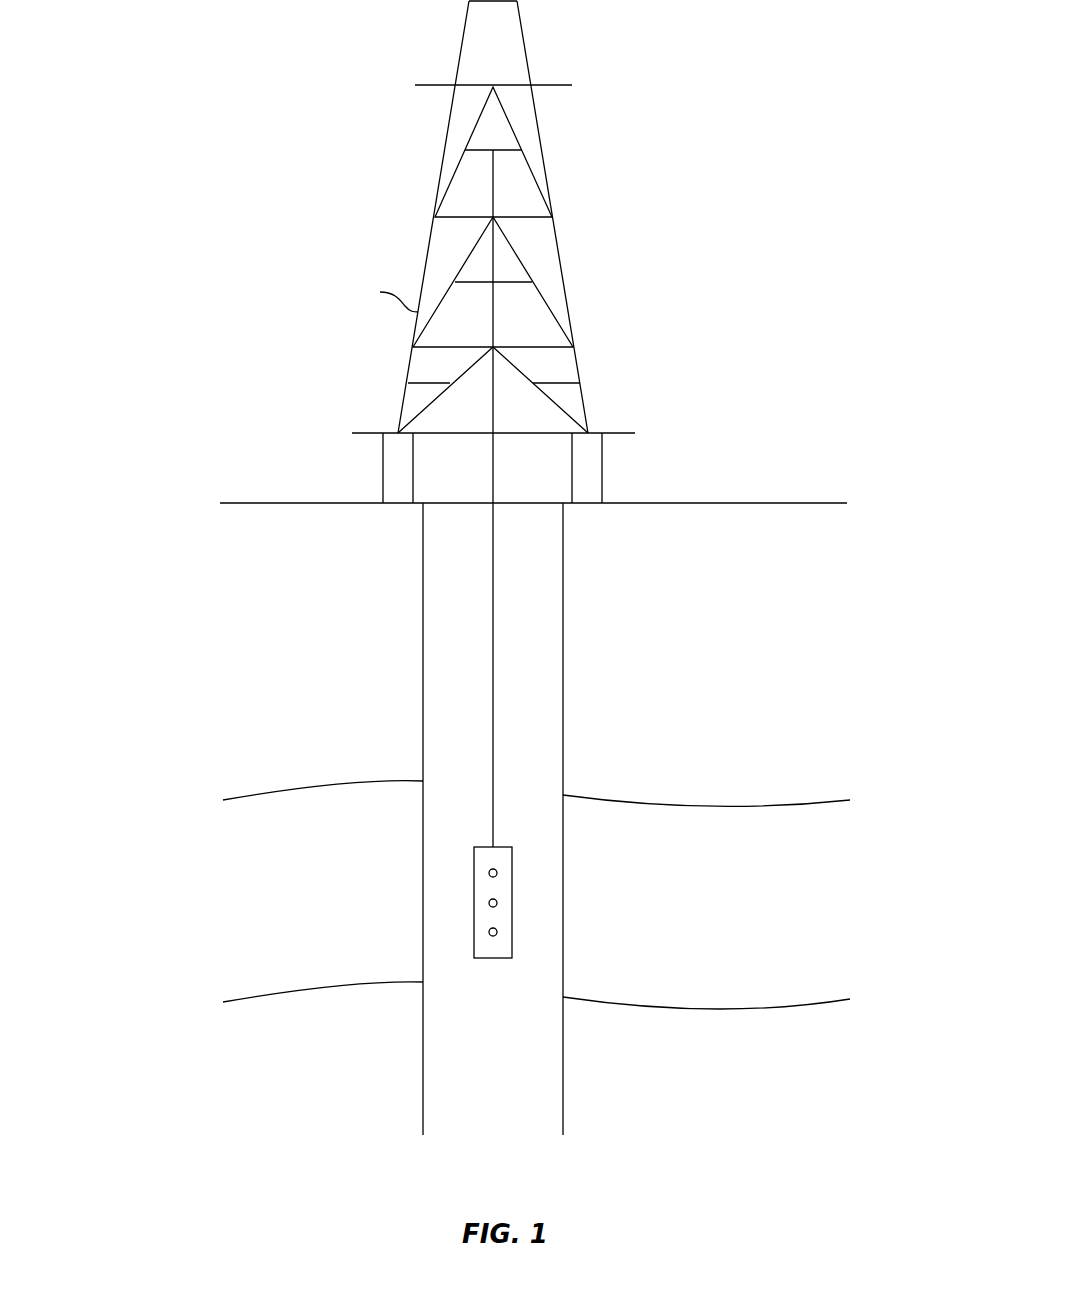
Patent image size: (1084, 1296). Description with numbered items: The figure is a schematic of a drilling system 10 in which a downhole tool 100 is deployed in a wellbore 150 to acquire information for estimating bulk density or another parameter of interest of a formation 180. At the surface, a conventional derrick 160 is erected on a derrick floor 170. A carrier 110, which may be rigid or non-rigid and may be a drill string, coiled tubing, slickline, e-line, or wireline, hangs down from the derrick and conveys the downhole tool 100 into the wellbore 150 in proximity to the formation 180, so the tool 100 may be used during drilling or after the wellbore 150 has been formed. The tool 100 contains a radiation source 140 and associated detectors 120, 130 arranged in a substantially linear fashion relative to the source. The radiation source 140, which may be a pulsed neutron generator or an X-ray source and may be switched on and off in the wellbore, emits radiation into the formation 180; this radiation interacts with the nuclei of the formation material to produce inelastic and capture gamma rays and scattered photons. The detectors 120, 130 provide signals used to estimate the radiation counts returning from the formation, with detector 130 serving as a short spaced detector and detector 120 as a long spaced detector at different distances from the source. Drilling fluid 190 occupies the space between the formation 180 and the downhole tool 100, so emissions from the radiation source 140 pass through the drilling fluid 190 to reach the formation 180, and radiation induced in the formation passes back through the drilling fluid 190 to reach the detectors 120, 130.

The drilling system 10 is at (742, 272).
The downhole tool 100 is at (474, 858).
The carrier 110 is at (494, 677).
The detector 120 is at (498, 873).
The detector 130 is at (498, 903).
The radiation source 140 is at (498, 932).
The wellbore 150 is at (563, 587).
The conventional derrick 160 is at (585, 403).
The derrick floor 170 is at (608, 505).
The formation 180 is at (754, 822).
The drilling fluid 190 is at (441, 946).